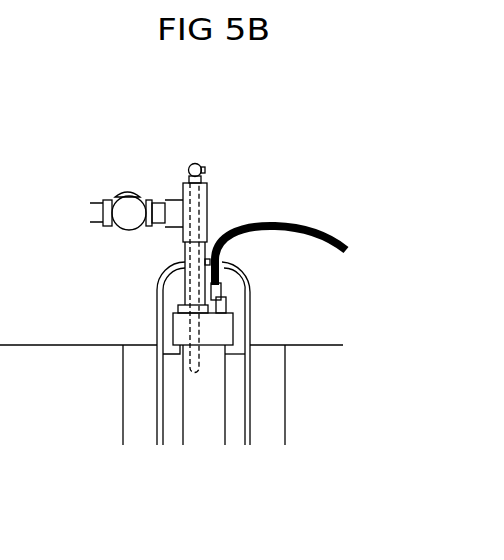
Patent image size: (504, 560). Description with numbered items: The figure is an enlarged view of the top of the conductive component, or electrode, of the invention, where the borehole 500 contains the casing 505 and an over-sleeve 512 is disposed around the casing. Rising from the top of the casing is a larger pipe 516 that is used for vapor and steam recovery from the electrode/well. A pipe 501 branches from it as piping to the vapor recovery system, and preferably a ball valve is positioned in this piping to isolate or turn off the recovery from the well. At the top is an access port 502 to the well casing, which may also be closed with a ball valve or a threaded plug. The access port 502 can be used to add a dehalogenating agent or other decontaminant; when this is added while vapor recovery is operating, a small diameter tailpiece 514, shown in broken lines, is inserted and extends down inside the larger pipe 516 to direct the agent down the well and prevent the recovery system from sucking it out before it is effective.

The borehole 500 is at (123, 425).
The pipe 501 is at (100, 202).
The access port 502 is at (192, 162).
The casing 505 is at (225, 415).
The over-sleeve 512 is at (250, 327).
The tailpiece 514 is at (198, 363).
The larger pipe 516 is at (185, 255).